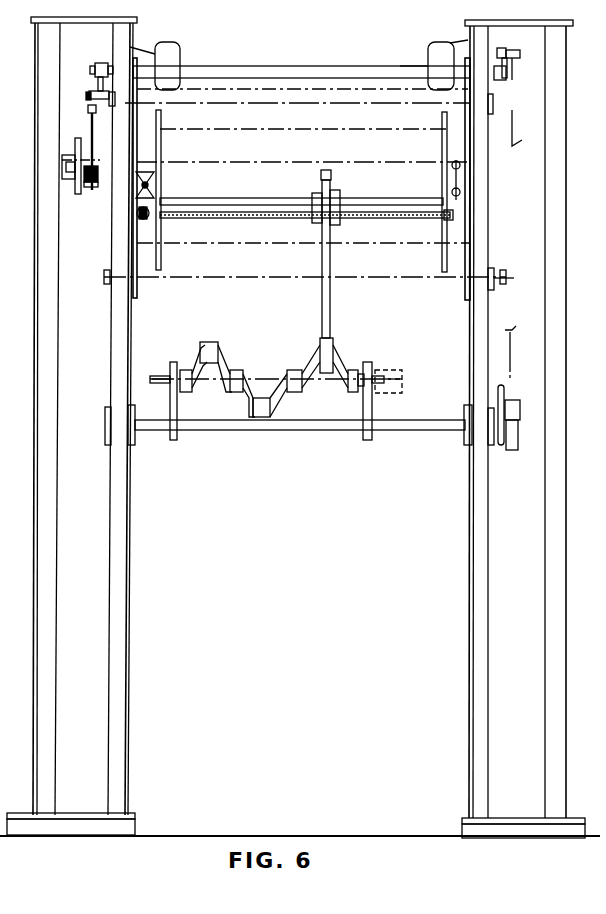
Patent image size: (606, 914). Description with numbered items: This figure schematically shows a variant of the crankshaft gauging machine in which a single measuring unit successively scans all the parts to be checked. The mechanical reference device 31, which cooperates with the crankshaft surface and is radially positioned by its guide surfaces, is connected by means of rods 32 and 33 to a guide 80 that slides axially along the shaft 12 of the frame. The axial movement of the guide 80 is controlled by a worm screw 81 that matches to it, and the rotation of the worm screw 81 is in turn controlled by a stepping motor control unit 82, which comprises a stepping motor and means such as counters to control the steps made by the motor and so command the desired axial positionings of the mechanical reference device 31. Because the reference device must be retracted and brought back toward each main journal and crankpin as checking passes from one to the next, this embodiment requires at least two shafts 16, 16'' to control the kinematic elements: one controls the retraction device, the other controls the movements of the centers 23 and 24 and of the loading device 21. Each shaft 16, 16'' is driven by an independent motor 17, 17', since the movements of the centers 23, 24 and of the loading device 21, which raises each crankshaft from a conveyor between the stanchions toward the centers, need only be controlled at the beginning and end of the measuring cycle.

The shaft 12 is at (198, 198).
The horizontal shaft 16 is at (301, 58).
The shaft 16'' is at (400, 48).
The motor 17 is at (176, 52).
The motor 17' is at (437, 52).
The loading device 21 is at (186, 444).
The center 23 is at (160, 374).
The center 24 is at (392, 374).
The mechanical reference device 31 is at (333, 345).
The rod 32 is at (330, 272).
The rod 33 is at (330, 172).
The guide 80 is at (313, 193).
The worm screw 81 is at (250, 218).
The stepping motor control unit 82 is at (144, 220).